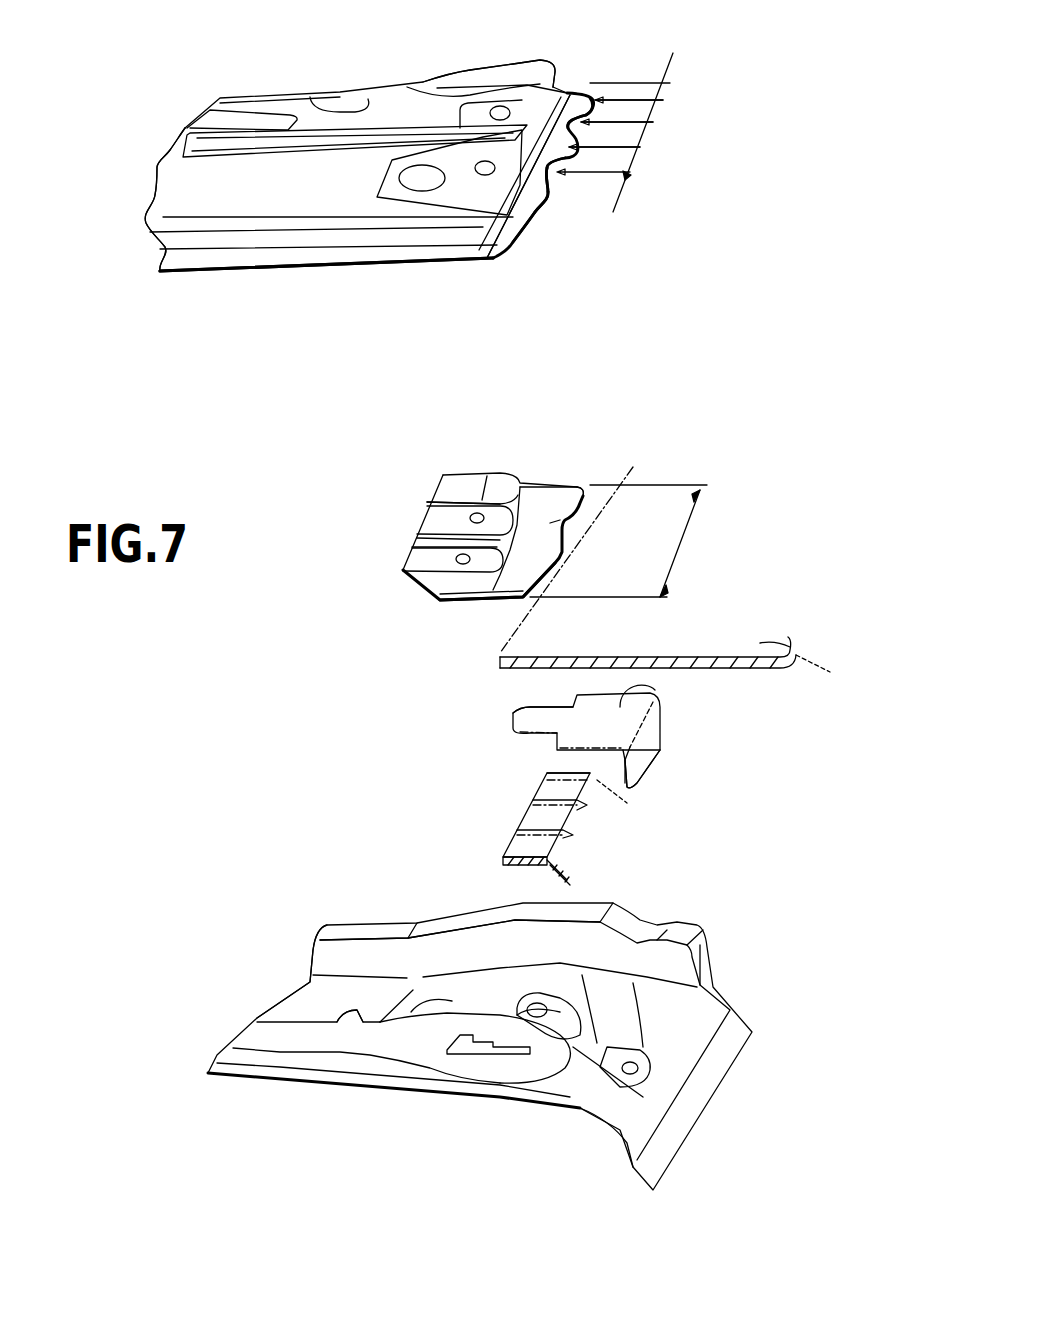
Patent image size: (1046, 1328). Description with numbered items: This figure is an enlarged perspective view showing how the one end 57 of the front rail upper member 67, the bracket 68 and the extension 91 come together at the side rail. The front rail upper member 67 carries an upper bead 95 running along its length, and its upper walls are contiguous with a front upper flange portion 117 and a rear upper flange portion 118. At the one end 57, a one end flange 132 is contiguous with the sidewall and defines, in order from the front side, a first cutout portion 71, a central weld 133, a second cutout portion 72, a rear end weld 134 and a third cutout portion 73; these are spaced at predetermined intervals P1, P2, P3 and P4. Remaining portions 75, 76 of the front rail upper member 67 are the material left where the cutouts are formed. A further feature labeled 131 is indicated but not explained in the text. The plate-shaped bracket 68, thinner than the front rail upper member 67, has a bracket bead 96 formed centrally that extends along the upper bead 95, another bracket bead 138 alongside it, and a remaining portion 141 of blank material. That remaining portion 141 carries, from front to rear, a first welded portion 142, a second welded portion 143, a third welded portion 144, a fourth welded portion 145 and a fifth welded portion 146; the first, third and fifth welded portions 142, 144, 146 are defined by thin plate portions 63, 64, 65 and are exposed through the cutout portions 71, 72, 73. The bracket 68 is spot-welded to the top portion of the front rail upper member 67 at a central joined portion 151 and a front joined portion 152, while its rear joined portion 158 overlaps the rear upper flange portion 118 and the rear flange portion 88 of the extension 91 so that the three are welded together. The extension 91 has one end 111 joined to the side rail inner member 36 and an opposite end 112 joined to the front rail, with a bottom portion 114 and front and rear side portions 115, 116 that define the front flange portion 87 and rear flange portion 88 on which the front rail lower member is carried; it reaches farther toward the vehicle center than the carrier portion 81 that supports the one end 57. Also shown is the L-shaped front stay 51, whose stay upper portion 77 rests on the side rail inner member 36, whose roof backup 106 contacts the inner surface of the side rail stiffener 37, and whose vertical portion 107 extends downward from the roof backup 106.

The one end 57 is at (383, 88).
The front rail upper member 67 is at (163, 157).
The upper bead 95 is at (327, 155).
The rear upper flange portion 118 is at (452, 83).
The remaining portion 76 is at (527, 83).
The third cutout portion 73 is at (577, 90).
The rear end weld 134 is at (583, 117).
The second cutout portion 72 is at (598, 98).
The central weld 133 is at (580, 152).
The first cutout portion 71 is at (547, 170).
The one end flange 132 is at (548, 185).
The fourth notch 131 is at (528, 218).
The remaining portion 75 is at (538, 145).
The front upper flange portion 117 is at (387, 255).
The predetermined interval p1 P1 is at (525, 138).
The predetermined interval p2 P2 is at (626, 143).
The predetermined interval p3 P3 is at (641, 105).
The predetermined interval p4 P4 is at (655, 77).
The thin plate portion 65 is at (533, 504).
The fifth welded portion 146 is at (563, 490).
The bracket 68 is at (448, 474).
The central joined portion 151 is at (437, 518).
The another bracket bead 138 is at (437, 502).
The bracket bead 96 is at (418, 540).
The front joined portion 152 is at (417, 557).
The rear joined portion 158 is at (523, 486).
The thin plate portion 63 is at (469, 607).
The first welded portion 142 is at (510, 588).
The second welded portion 143 is at (533, 553).
The fourth welded portion 145 is at (550, 505).
The thin plate portion 64 is at (674, 561).
The third welded portion 144 is at (560, 523).
The remaining portion 141 is at (687, 537).
The side rail stiffener 37 is at (800, 660).
The front stay 51 is at (667, 723).
The roof backup 106 is at (655, 690).
The vertical portion 107 is at (650, 750).
The stay upper portion 77 is at (513, 713).
The side rail inner member 36 is at (600, 830).
The carrier portion 81 is at (547, 780).
The one end 111 is at (693, 1092).
The rear flange portion 88 is at (379, 922).
The rear side portion 116 is at (462, 940).
The extension 91 is at (303, 985).
The opposite end 112 is at (305, 1010).
The front flange portion 87 is at (300, 1062).
The front side portion 115 is at (340, 1022).
The bottom portion 114 is at (415, 1023).